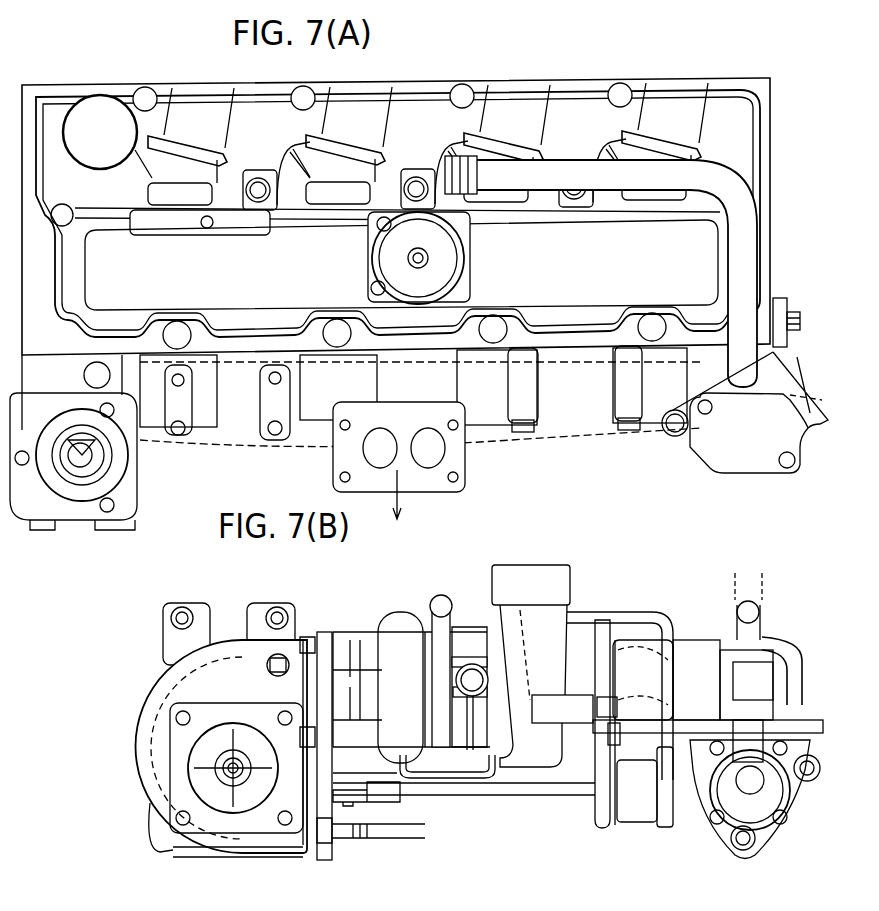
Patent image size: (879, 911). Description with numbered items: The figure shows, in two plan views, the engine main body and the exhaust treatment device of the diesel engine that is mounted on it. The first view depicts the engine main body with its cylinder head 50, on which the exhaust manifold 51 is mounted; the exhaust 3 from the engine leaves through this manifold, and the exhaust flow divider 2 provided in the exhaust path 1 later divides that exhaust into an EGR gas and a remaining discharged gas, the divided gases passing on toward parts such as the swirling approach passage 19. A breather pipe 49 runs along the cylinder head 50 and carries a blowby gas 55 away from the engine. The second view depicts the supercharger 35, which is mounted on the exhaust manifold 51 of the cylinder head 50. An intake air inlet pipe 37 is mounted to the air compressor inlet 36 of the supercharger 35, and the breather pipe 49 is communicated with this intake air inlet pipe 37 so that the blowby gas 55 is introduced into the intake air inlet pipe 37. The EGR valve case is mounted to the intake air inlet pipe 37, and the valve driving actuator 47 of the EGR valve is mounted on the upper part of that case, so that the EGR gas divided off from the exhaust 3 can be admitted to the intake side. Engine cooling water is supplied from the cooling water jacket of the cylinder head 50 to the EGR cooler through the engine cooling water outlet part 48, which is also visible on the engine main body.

In FIG. 7B, the exhaust path 1 is at (303, 596).
In FIG. 7B, the exhaust flow divider 2 is at (145, 677).
In FIG. 7A, the exhaust 3 is at (421, 502).
In FIG. 7B, the exhaust 3 is at (150, 767).
In FIG. 7B, the swirling approach passage 19 is at (142, 733).
In FIG. 7B, the supercharger 35 is at (457, 593).
In FIG. 7B, the air compressor inlet 36 is at (567, 657).
In FIG. 7B, the intake air inlet pipe 37 is at (703, 663).
In FIG. 7B, the valve driving actuator 47 is at (757, 807).
In FIG. 7A, the engine cooling water outlet part 48 is at (80, 518).
In FIG. 7A, the breather pipe 49 is at (745, 330).
In FIG. 7B, the breather pipe 49 is at (755, 594).
In FIG. 7A, the cylinder head 50 is at (62, 103).
In FIG. 7A, the exhaust manifold 51 is at (494, 432).
In FIG. 7A, the blowby gas 55 is at (748, 295).
In FIG. 7B, the blowby gas 55 is at (748, 543).